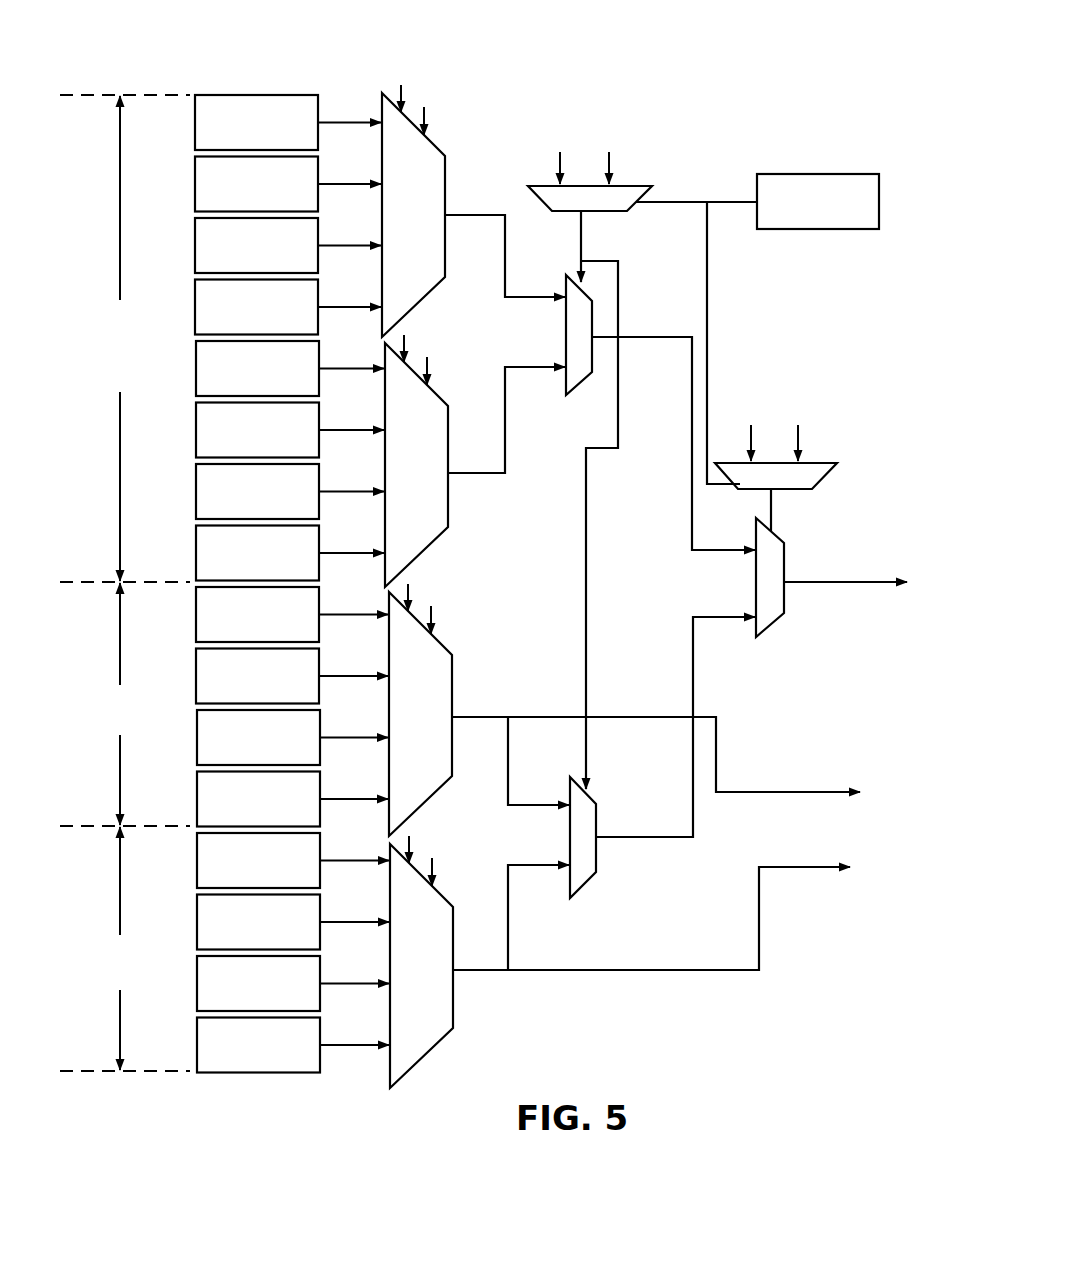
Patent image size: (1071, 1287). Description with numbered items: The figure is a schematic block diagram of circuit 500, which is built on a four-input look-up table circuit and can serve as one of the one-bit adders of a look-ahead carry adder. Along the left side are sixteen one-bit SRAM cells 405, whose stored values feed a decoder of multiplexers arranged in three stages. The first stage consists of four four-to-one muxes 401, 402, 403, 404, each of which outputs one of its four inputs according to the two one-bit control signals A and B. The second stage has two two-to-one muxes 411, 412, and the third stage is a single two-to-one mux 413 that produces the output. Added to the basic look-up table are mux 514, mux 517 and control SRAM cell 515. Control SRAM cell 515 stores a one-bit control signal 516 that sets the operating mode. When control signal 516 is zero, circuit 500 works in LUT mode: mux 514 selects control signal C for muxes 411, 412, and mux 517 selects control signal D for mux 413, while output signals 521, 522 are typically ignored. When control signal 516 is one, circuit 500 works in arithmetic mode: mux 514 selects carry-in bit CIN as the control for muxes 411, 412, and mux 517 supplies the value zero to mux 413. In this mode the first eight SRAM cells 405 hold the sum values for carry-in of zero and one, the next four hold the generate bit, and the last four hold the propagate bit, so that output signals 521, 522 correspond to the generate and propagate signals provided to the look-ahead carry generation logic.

The circuit 500 is at (664, 55).
The SRAM cells 405 is at (235, 93).
The mux 401 is at (413, 202).
The mux 402 is at (416, 453).
The mux 403 is at (420, 704).
The mux 404 is at (424, 954).
The mux 411 is at (582, 390).
The mux 412 is at (582, 890).
The mux 413 is at (786, 556).
The mux 514 is at (642, 186).
The control SRAM cell 515 is at (822, 174).
The control signal 516 is at (668, 202).
The mux 517 is at (818, 463).
The output signal 521 is at (603, 716).
The output signal 522 is at (587, 971).